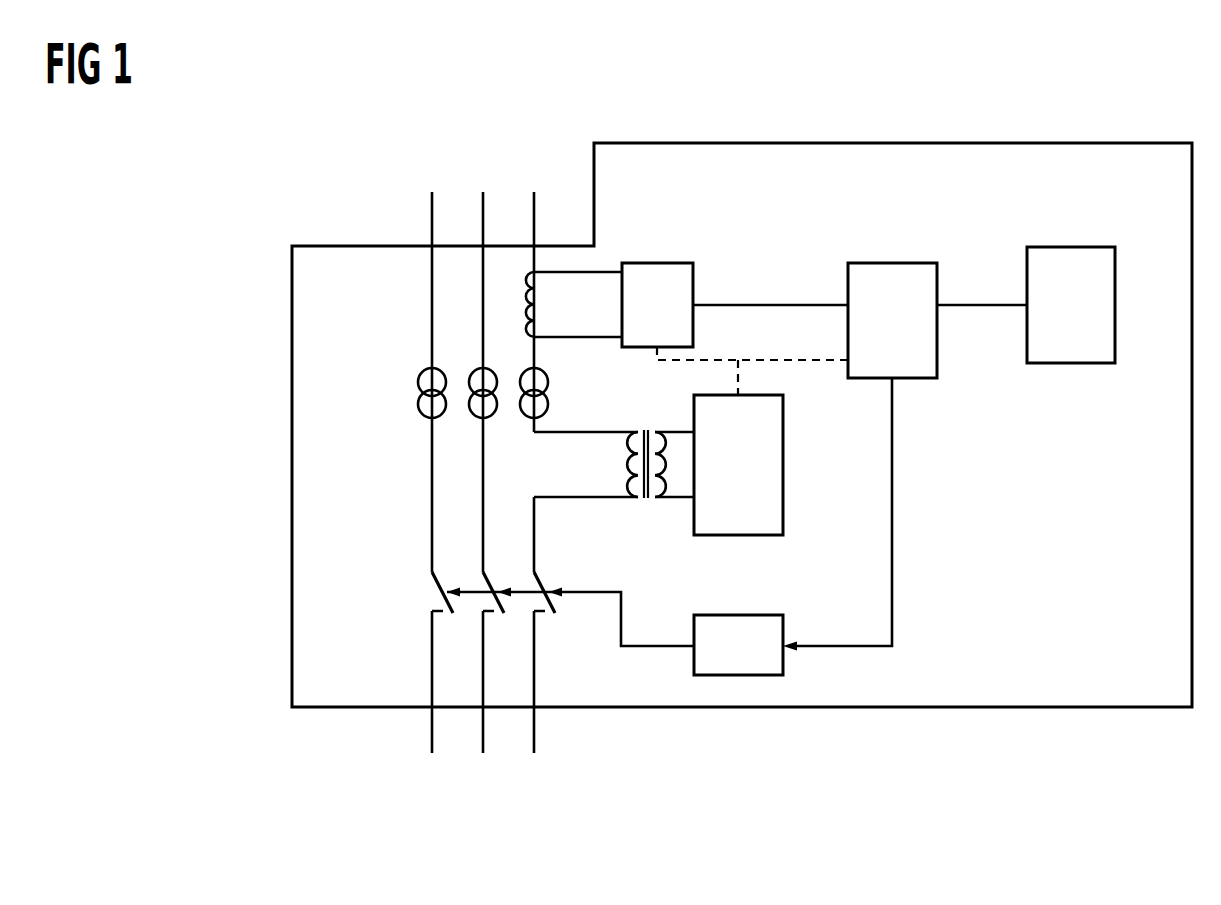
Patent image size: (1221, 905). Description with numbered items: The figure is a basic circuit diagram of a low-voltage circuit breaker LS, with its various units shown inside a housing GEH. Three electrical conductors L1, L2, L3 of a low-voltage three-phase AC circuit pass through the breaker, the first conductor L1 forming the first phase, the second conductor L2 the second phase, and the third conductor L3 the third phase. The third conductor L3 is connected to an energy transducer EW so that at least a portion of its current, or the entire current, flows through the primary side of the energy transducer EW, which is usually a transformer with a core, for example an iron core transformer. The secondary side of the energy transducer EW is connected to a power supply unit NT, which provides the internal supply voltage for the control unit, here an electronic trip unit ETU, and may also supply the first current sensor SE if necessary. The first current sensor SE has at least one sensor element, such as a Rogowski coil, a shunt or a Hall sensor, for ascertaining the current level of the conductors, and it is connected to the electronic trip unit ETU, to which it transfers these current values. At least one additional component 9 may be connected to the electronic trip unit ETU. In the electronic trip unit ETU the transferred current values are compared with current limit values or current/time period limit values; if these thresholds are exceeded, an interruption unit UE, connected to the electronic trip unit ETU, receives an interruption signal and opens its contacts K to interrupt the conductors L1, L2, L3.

The first conductor L1 is at (432, 453).
The second conductor L2 is at (484, 453).
The third conductor L3 is at (535, 453).
The first current sensor SE is at (659, 262).
The electronic trip unit ETU is at (896, 262).
The additional component 9 is at (1071, 246).
The energy transducer EW is at (645, 428).
The power supply unit NT is at (783, 466).
The interruption unit UE is at (738, 614).
The contacts K is at (398, 606).
The low-voltage circuit breaker LS is at (806, 748).
The housing GEH is at (1058, 709).